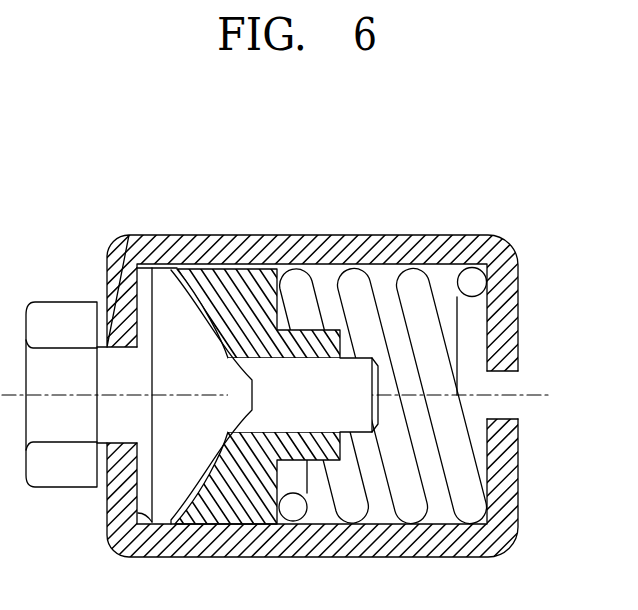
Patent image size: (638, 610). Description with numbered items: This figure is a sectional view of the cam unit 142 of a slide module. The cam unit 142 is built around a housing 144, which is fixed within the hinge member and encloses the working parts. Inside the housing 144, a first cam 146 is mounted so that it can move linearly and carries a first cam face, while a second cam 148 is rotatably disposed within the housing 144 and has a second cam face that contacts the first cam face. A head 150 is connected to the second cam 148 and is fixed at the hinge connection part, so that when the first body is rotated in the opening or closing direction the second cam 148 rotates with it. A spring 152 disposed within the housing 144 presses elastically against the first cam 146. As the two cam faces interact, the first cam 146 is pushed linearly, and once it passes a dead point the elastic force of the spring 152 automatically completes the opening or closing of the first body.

The cam unit 142 is at (521, 236).
The housing 144 is at (410, 243).
The first cam 146 is at (235, 278).
The second cam 148 is at (162, 273).
The head 150 is at (62, 313).
The spring 152 is at (352, 278).